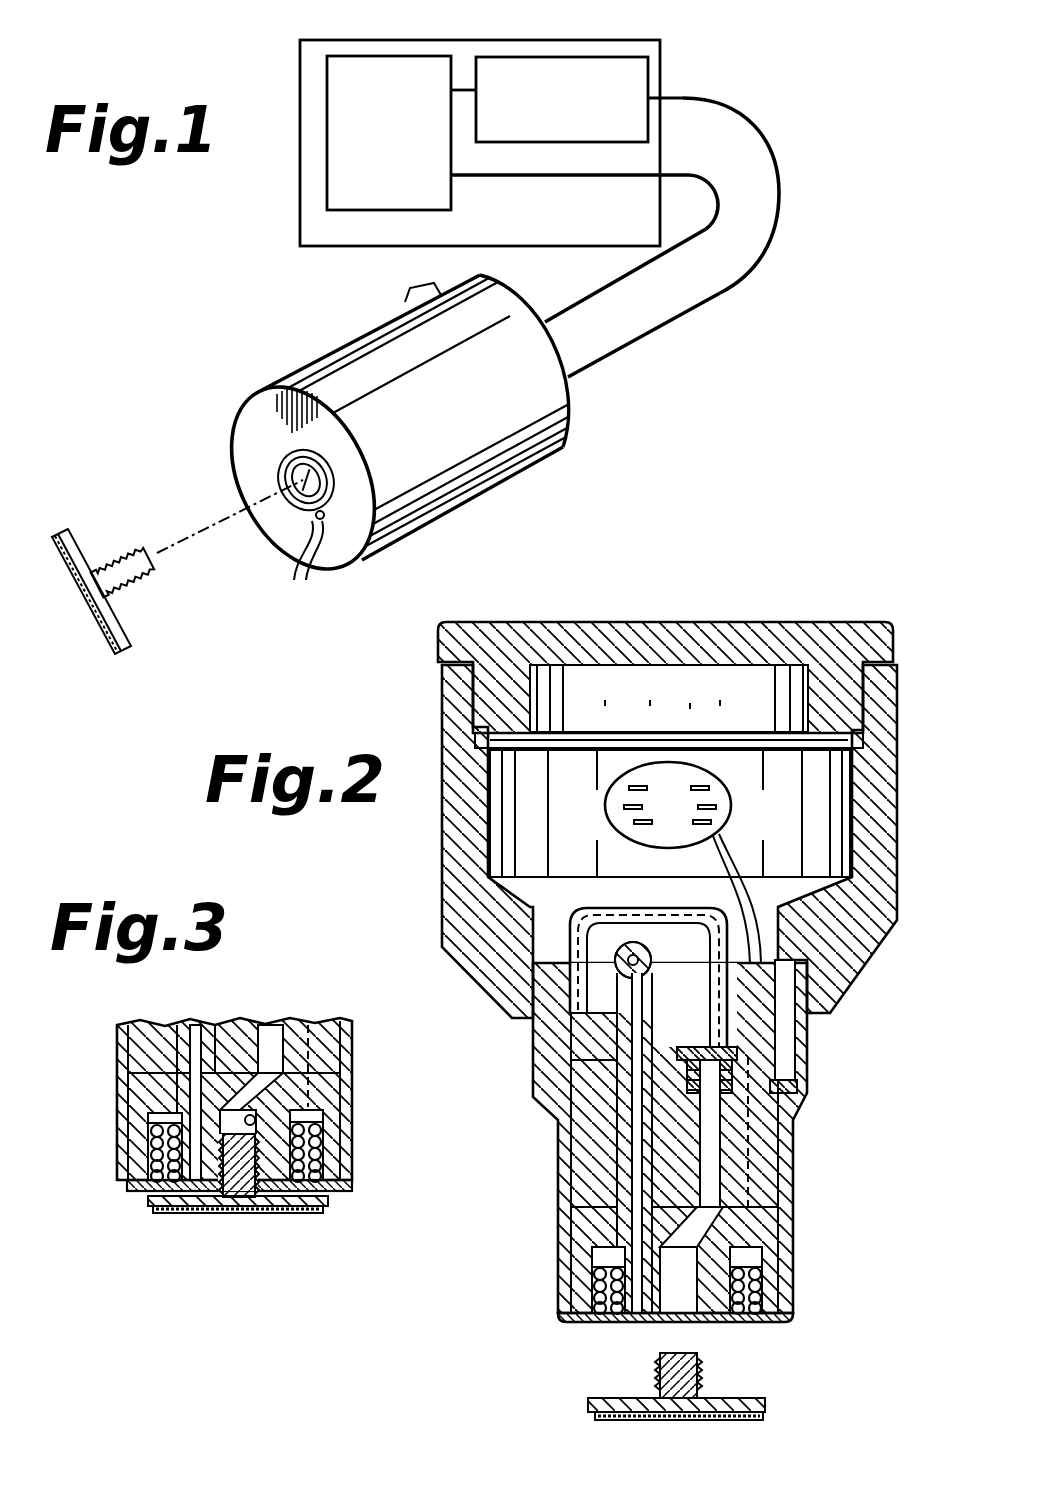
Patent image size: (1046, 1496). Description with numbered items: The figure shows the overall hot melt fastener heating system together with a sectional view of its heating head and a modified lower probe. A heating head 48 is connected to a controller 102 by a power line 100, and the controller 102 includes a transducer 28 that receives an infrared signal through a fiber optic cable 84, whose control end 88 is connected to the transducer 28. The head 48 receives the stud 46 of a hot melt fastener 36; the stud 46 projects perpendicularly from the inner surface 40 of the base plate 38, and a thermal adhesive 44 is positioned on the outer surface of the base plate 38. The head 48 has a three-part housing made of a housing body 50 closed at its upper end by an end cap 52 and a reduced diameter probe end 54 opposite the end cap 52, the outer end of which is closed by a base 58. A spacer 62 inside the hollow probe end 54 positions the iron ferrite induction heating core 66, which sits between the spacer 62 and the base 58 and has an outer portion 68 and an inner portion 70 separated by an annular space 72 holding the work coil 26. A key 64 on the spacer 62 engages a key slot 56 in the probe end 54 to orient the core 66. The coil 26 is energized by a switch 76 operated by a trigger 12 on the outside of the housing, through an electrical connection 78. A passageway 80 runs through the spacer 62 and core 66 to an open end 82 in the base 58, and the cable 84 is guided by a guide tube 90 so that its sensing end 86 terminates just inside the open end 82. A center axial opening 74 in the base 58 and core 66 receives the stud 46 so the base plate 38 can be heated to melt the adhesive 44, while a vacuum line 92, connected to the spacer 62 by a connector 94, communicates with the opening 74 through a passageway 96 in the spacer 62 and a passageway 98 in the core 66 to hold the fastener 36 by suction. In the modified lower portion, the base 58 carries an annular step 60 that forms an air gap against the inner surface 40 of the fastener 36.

In FIG. 1, the trigger 12 is at (413, 288).
In FIG. 2, the work coil 26 is at (767, 1287).
In FIG. 3, the work coil 26 is at (320, 1120).
In FIG. 1, the transducer 28 is at (652, 75).
In FIG. 1, the hot melt fastener 36 is at (114, 505).
In FIG. 2, the hot melt fastener 36 is at (548, 1377).
In FIG. 3, the hot melt fastener 36 is at (203, 1240).
In FIG. 1, the base plate 38 is at (120, 645).
In FIG. 1, the inner surface 40 is at (112, 630).
In FIG. 2, the inner surface 40 is at (740, 1398).
In FIG. 1, the thermal adhesive 44 is at (108, 628).
In FIG. 2, the thermal adhesive 44 is at (740, 1418).
In FIG. 1, the stud 46 is at (137, 547).
In FIG. 2, the stud 46 is at (660, 1368).
In FIG. 3, the stud 46 is at (275, 1214).
In FIG. 1, the heating head 48 is at (540, 481).
In FIG. 2, the heating head 48 is at (740, 600).
In FIG. 2, the housing body 50 is at (455, 851).
In FIG. 2, the end cap 52 is at (505, 633).
In FIG. 2, the probe end 54 is at (535, 1062).
In FIG. 3, the probe end 54 is at (352, 1043).
In FIG. 2, the key slot 56 is at (787, 1062).
In FIG. 1, the base 58 is at (265, 415).
In FIG. 2, the base 58 is at (770, 1318).
In FIG. 1, the annular step 60 is at (294, 580).
In FIG. 3, the annular step 60 is at (273, 1213).
In FIG. 2, the spacer 62 is at (583, 1156).
In FIG. 3, the spacer 62 is at (152, 1036).
In FIG. 2, the key 64 is at (800, 1086).
In FIG. 2, the induction heating core 66 is at (765, 1222).
In FIG. 2, the outer portion 68 is at (776, 1270).
In FIG. 2, the inner portion 70 is at (718, 1300).
In FIG. 2, the annular space 72 is at (588, 1258).
In FIG. 2, the center axial opening 74 is at (682, 1302).
In FIG. 3, the center axial opening 74 is at (293, 1097).
In FIG. 2, the switch 76 is at (727, 788).
In FIG. 2, the electrical connection 78 is at (740, 860).
In FIG. 2, the passageway 80 is at (600, 1121).
In FIG. 3, the passageway 80 is at (198, 1087).
In FIG. 1, the open end 82 is at (355, 568).
In FIG. 2, the open end 82 is at (638, 1320).
In FIG. 1, the fiber optic cable 84 is at (713, 293).
In FIG. 2, the fiber optic cable 84 is at (630, 1273).
In FIG. 3, the fiber optic cable 84 is at (195, 1117).
In FIG. 2, the sensing end 86 is at (644, 1316).
In FIG. 1, the control end 88 is at (660, 97).
In FIG. 2, the guide tube 90 is at (620, 1036).
In FIG. 2, the vacuum line 92 is at (590, 917).
In FIG. 2, the connector 94 is at (693, 1043).
In FIG. 2, the passageway 96 is at (712, 1148).
In FIG. 2, the passageway 98 is at (763, 1200).
In FIG. 1, the power line 100 is at (612, 284).
In FIG. 1, the controller 102 is at (300, 182).